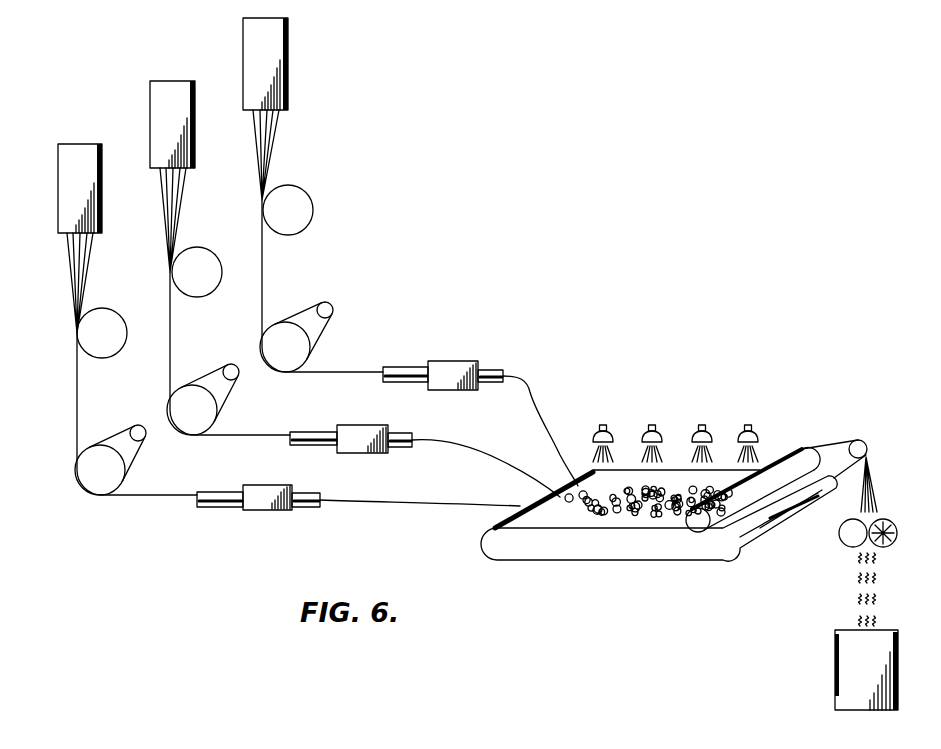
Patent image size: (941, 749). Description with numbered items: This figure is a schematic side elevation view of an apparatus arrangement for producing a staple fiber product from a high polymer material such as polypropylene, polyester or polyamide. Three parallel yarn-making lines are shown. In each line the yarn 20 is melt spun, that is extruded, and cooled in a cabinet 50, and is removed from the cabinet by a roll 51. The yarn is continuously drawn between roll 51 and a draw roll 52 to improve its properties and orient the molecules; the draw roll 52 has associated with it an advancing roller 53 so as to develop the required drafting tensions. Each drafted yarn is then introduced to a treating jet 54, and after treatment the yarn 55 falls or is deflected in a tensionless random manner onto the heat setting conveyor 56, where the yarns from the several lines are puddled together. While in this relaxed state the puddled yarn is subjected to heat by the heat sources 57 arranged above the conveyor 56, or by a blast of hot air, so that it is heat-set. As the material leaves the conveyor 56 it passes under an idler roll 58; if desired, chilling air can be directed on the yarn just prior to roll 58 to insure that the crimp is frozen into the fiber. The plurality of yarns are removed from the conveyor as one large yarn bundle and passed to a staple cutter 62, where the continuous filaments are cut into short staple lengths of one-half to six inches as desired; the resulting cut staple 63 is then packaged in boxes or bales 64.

The cabinet 50 is at (289, 46).
The yarn 20 is at (277, 141).
The roll 51 is at (299, 188).
The draw roll 52 is at (274, 330).
The advancing roller 53 is at (329, 302).
The texturizing unit 54 is at (457, 362).
The treated yarn 55 is at (525, 378).
The conveyor 56 is at (598, 553).
The heat sources 57 is at (655, 422).
The idler roll 58 is at (790, 450).
The staple cutter 62 is at (875, 473).
The crimped fibers 63 is at (858, 577).
The boxes or bales 64 is at (848, 672).